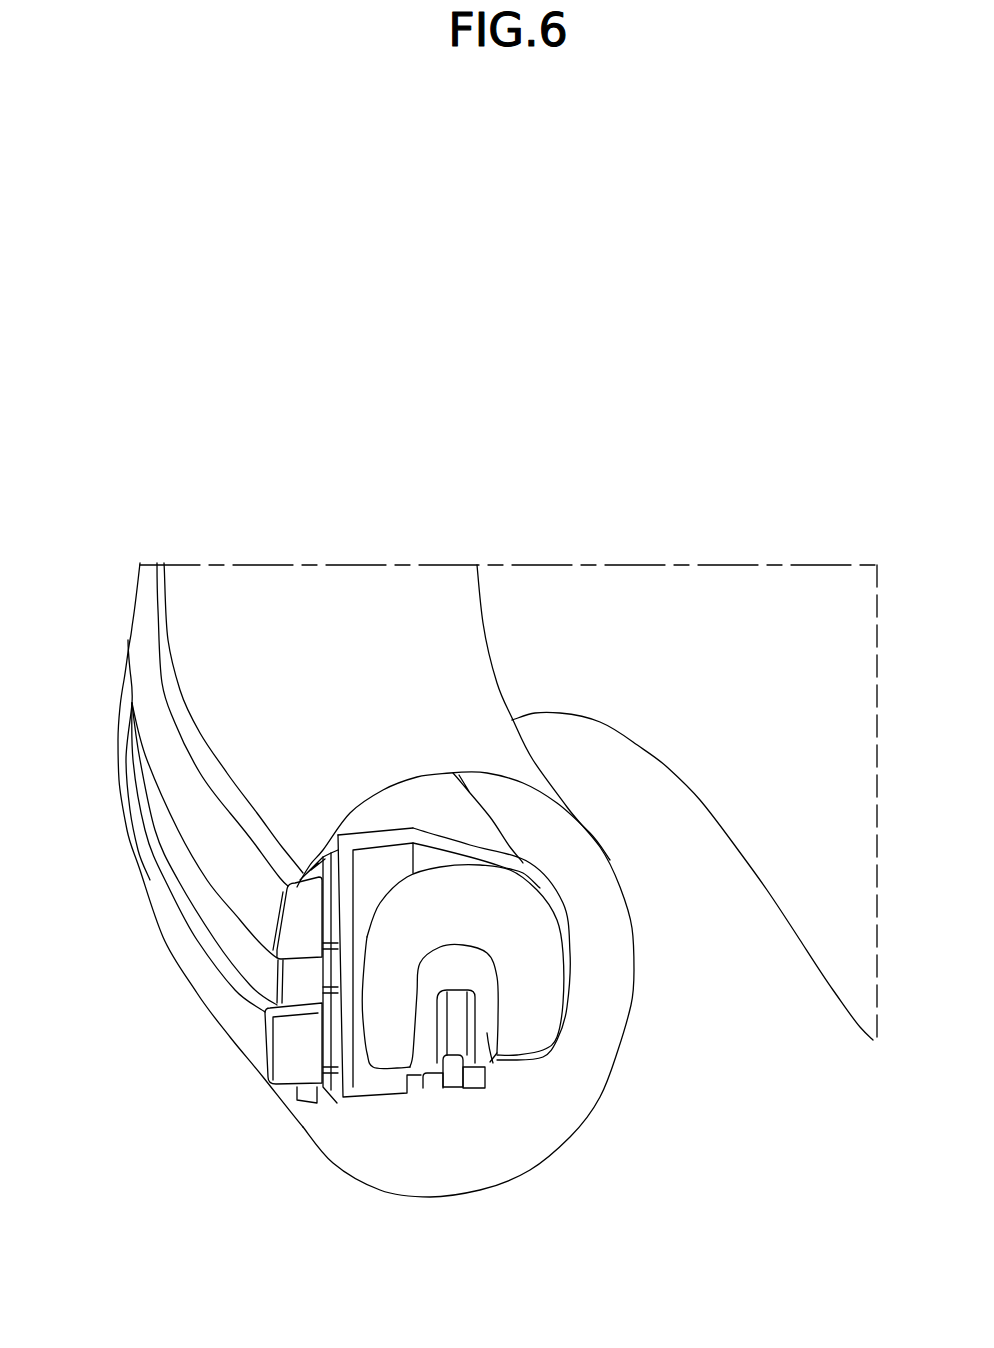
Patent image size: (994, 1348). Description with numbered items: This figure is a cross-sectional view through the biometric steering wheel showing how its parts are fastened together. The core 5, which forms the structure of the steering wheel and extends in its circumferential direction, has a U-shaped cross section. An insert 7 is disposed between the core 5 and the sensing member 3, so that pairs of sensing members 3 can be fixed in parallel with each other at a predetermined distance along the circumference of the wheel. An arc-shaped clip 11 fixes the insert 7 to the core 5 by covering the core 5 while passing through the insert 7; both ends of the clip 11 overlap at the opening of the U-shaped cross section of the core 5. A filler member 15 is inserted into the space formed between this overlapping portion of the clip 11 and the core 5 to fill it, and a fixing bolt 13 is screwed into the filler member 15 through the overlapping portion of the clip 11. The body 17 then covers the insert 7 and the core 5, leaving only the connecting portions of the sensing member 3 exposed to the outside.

The sensing member 3 is at (190, 796).
The core 5 is at (518, 930).
The insert 7 is at (292, 1048).
The clip 11 is at (442, 847).
The fixing bolt 13 is at (452, 1083).
The filler member 15 is at (487, 1035).
The body 17 is at (473, 1147).